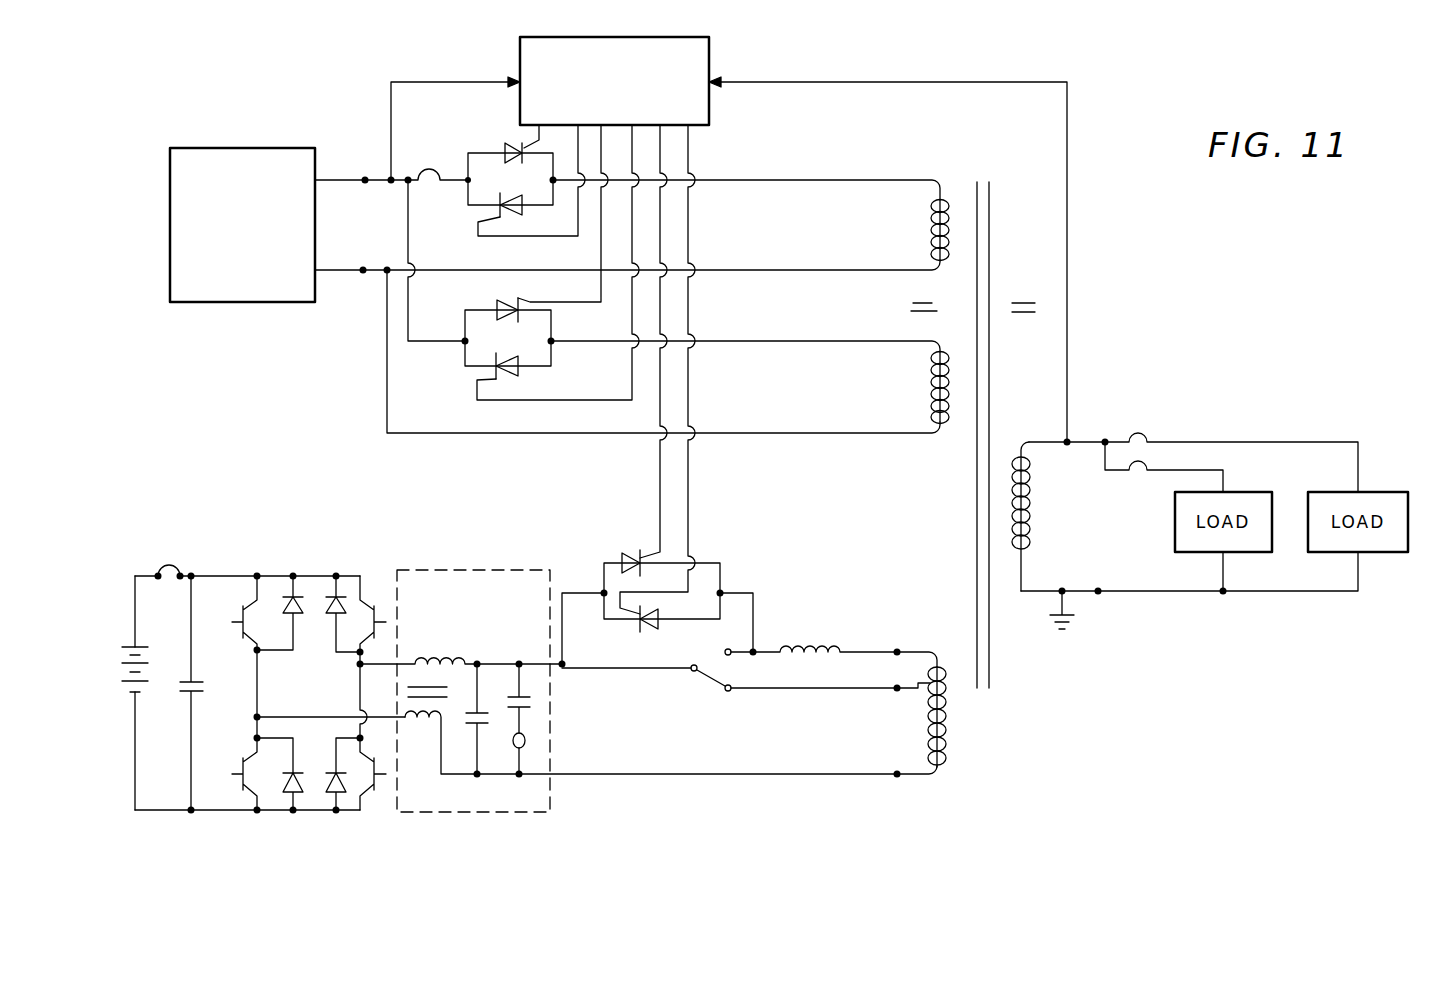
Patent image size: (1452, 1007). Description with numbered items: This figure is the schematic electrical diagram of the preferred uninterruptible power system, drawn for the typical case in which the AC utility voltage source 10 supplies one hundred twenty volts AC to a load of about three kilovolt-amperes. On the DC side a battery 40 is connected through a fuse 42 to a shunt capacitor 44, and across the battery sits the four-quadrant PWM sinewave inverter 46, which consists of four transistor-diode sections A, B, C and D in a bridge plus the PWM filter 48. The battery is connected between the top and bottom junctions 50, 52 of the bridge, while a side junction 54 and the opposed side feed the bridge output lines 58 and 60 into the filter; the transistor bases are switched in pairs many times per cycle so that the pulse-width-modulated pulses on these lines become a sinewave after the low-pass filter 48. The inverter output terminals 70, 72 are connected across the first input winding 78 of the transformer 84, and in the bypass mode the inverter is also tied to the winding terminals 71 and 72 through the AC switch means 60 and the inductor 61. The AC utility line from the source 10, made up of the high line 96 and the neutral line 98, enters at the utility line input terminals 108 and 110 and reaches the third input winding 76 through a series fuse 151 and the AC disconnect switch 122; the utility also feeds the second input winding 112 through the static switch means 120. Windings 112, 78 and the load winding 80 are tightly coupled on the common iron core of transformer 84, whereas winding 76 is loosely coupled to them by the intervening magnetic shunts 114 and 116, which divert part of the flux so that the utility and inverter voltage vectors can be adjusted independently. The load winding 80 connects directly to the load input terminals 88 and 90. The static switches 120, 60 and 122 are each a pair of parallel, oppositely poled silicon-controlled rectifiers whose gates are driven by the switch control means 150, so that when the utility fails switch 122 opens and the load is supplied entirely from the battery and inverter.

The AC utility voltage source 10 is at (232, 150).
The high line 96 is at (333, 178).
The neutral line 98 is at (363, 273).
The utility line input terminal 108 is at (364, 183).
The utility line input terminal 110 is at (364, 268).
The series fuse 151 is at (448, 152).
The AC disconnect switch 122 is at (541, 210).
The static switch means 120 is at (552, 345).
The switch control means 150 is at (710, 58).
The third input winding 76 is at (934, 238).
The second input winding 112 is at (932, 392).
The transformer 84 is at (990, 188).
The magnetic shunt 116 is at (915, 301).
The magnetic shunt 114 is at (1035, 303).
The load winding 80 is at (1030, 512).
The load input terminal 88 is at (1106, 440).
The load input terminal 90 is at (1098, 590).
The battery 40 is at (118, 660).
The fuse 42 is at (178, 574).
The shunt capacitor 44 is at (200, 682).
The four-quadrant PWM sinewave inverter 46 is at (270, 672).
The top junction of the bridge 50 is at (320, 576).
The bottom junction of the bridge 52 is at (275, 812).
The side junction of the bridge 54 is at (255, 694).
The bridge output line 58 is at (310, 716).
The AC switch means 60 is at (392, 661).
The PWM filter 48 is at (565, 693).
The inductor 61 is at (802, 657).
The inverter output terminal 70 is at (896, 691).
The transformer winding terminal 71 is at (897, 650).
The inverter output terminal 72 is at (897, 778).
The first input winding 78 is at (925, 737).